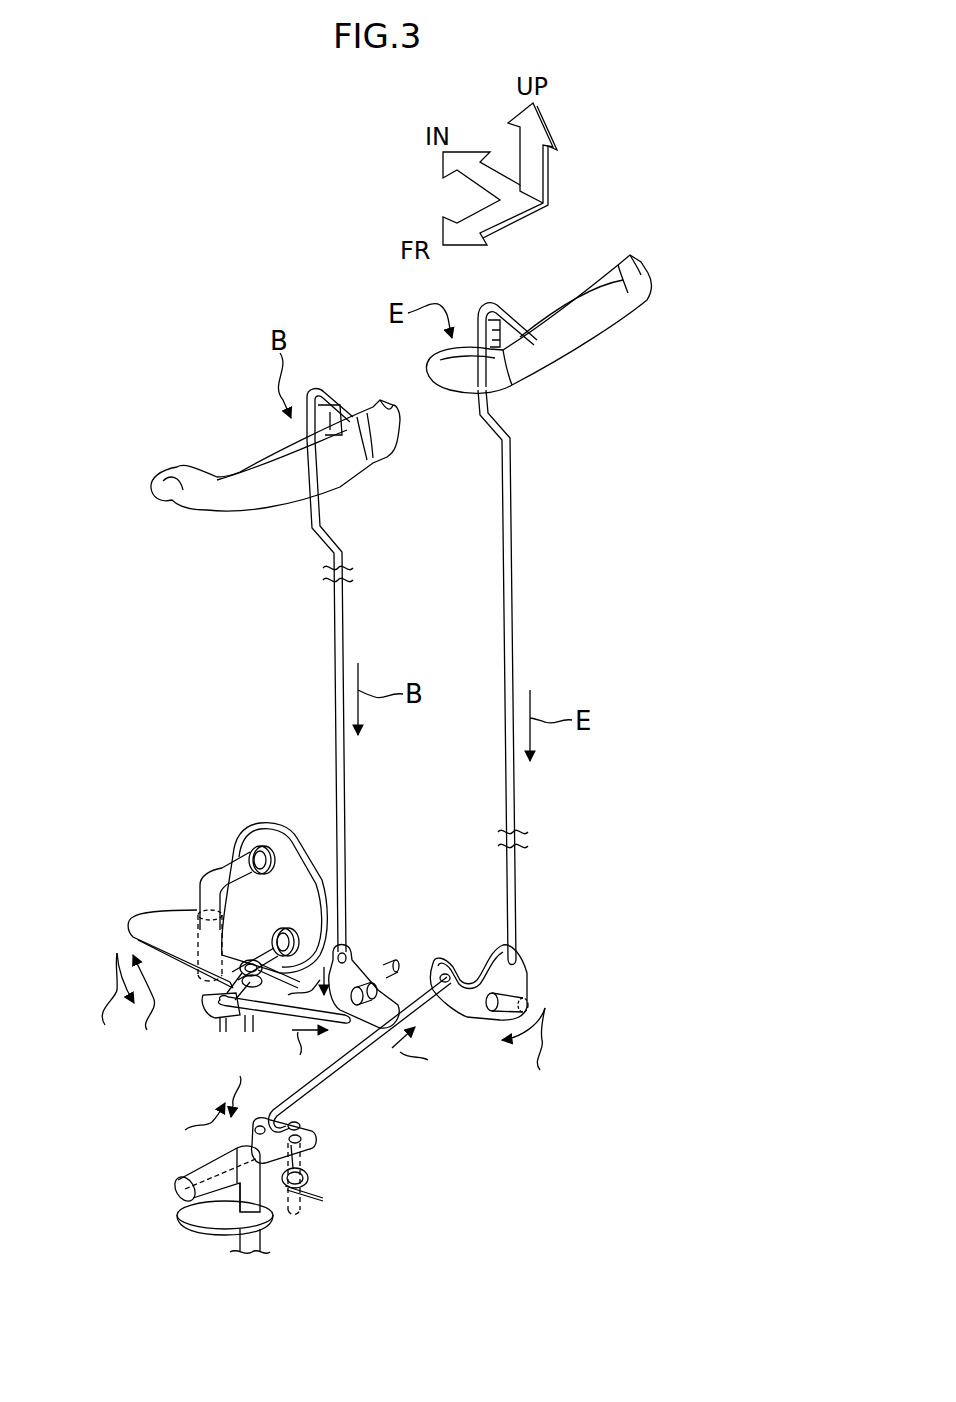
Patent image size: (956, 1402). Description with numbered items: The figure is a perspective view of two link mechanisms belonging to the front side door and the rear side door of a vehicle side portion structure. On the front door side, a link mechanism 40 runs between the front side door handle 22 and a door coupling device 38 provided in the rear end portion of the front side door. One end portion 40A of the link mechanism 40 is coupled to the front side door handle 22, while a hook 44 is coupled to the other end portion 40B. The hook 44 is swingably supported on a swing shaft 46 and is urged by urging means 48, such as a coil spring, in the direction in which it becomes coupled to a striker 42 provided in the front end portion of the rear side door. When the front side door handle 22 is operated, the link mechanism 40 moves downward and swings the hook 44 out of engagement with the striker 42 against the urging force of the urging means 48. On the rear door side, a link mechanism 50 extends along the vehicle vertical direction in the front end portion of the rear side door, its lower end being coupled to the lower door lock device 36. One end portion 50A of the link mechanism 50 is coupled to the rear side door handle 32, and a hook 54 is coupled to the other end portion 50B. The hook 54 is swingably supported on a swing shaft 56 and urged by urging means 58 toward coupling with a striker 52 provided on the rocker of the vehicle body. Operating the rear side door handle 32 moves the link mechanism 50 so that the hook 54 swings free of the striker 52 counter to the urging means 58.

The front side door handle 22 is at (266, 463).
The rear side door handle 32 is at (590, 352).
The lower door lock device 36 is at (333, 1137).
The door coupling device 38 is at (120, 888).
The link mechanism 40 is at (333, 690).
The one end portion 40A is at (345, 417).
The other end portion 40B is at (210, 1020).
The striker 42 is at (220, 870).
The hook 44 is at (160, 908).
The swing shaft 46 is at (250, 1030).
The urging means 48 is at (280, 935).
The link mechanism 50 is at (519, 637).
The one end portion 50A is at (500, 310).
The other end portion 50B is at (290, 1125).
The striker 52 is at (270, 1203).
The hook 54 is at (262, 1238).
The swing shaft 56 is at (303, 1200).
The urging means 58 is at (308, 1190).